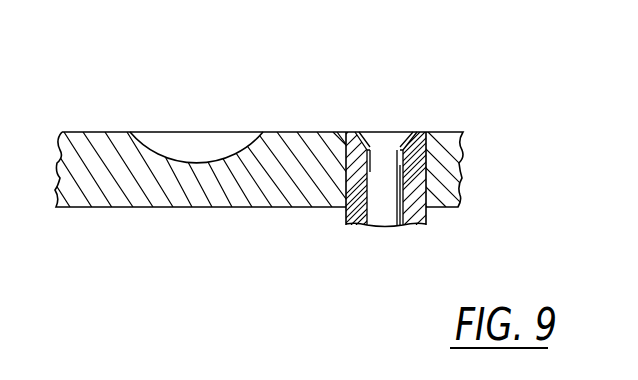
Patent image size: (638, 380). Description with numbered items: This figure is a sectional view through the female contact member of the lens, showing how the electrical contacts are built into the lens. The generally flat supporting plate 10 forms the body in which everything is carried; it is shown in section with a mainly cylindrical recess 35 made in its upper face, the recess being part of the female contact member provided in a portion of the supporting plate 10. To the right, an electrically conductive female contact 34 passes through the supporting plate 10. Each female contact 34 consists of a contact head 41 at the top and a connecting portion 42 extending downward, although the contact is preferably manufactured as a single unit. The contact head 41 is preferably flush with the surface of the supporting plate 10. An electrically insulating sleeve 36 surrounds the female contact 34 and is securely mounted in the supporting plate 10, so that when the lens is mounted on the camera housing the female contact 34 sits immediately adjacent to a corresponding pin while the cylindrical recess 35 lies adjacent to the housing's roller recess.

The supporting plate 10 is at (93, 140).
The cylindrical recess 35 is at (153, 150).
The female contact 34 is at (374, 120).
The contact head 41 is at (394, 138).
The connecting portion 42 is at (378, 229).
The insulating sleeve 36 is at (418, 227).